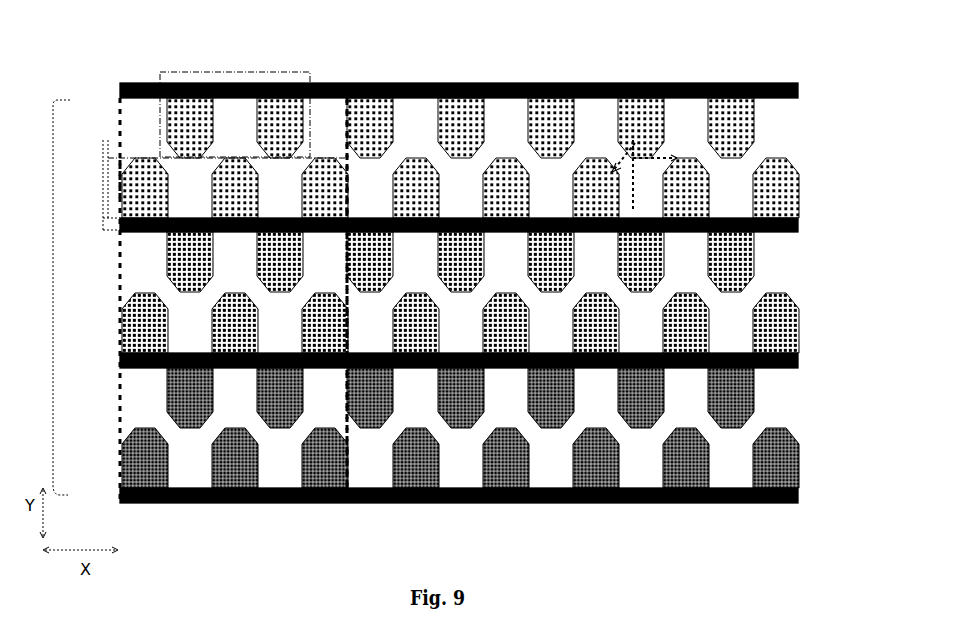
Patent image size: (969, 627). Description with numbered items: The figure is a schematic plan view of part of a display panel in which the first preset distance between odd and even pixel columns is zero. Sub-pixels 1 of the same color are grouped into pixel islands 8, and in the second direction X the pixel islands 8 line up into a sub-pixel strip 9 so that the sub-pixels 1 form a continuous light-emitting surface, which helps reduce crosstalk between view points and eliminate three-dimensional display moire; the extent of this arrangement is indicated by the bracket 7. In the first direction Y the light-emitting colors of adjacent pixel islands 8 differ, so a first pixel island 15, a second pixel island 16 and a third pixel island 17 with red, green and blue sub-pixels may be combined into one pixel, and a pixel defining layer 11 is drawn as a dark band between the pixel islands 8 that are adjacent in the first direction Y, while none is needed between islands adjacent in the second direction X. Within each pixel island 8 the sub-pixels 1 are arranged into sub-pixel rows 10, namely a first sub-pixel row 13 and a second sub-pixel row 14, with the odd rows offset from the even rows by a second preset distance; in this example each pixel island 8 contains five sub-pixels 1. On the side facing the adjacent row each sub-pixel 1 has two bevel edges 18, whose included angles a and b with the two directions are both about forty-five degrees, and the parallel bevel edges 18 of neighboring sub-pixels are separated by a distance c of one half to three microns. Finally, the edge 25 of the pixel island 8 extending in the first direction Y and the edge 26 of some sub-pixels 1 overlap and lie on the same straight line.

The sub-pixel 1 is at (730, 127).
The display region 7 is at (53, 288).
The pixel island 8 is at (407, 295).
The sub-pixel strip 9 is at (108, 150).
The sub-pixel row 10 is at (227, 88).
The pixel defining layer 11 is at (752, 496).
The first sub-pixel row 13 is at (242, 72).
The second sub-pixel row 14 is at (134, 160).
The first pixel island 15 is at (347, 153).
The second pixel island 16 is at (347, 295).
The third pixel island 17 is at (347, 430).
The bevel edge 18 is at (623, 163).
The edge of the pixel island 25 is at (120, 123).
The edge of the sub-pixel 26 is at (120, 178).